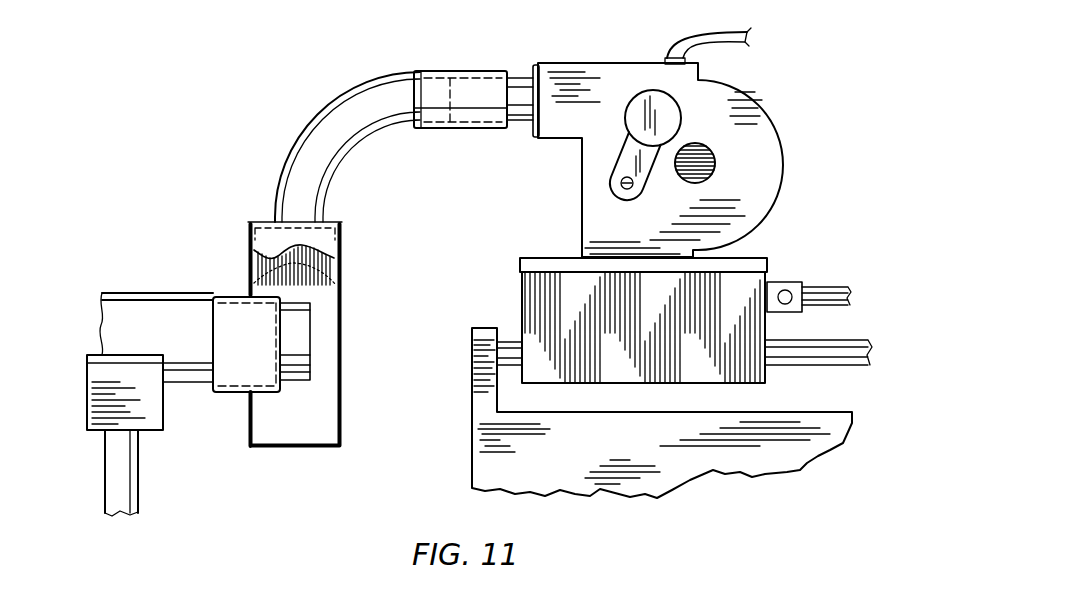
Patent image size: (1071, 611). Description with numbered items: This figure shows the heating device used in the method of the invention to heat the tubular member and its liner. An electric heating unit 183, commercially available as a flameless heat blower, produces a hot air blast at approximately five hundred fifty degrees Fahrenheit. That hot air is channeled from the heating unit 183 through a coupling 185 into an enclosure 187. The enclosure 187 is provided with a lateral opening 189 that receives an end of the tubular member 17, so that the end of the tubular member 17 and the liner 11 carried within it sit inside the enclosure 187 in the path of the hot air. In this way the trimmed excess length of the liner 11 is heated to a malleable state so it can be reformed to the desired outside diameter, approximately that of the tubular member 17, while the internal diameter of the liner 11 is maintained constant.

The coupling 185 is at (346, 112).
The electric heating unit 183 is at (767, 145).
The enclosure 187 is at (345, 290).
The tubular member 17 is at (190, 312).
The lateral opening 189 is at (245, 397).
The liner 11 is at (310, 367).